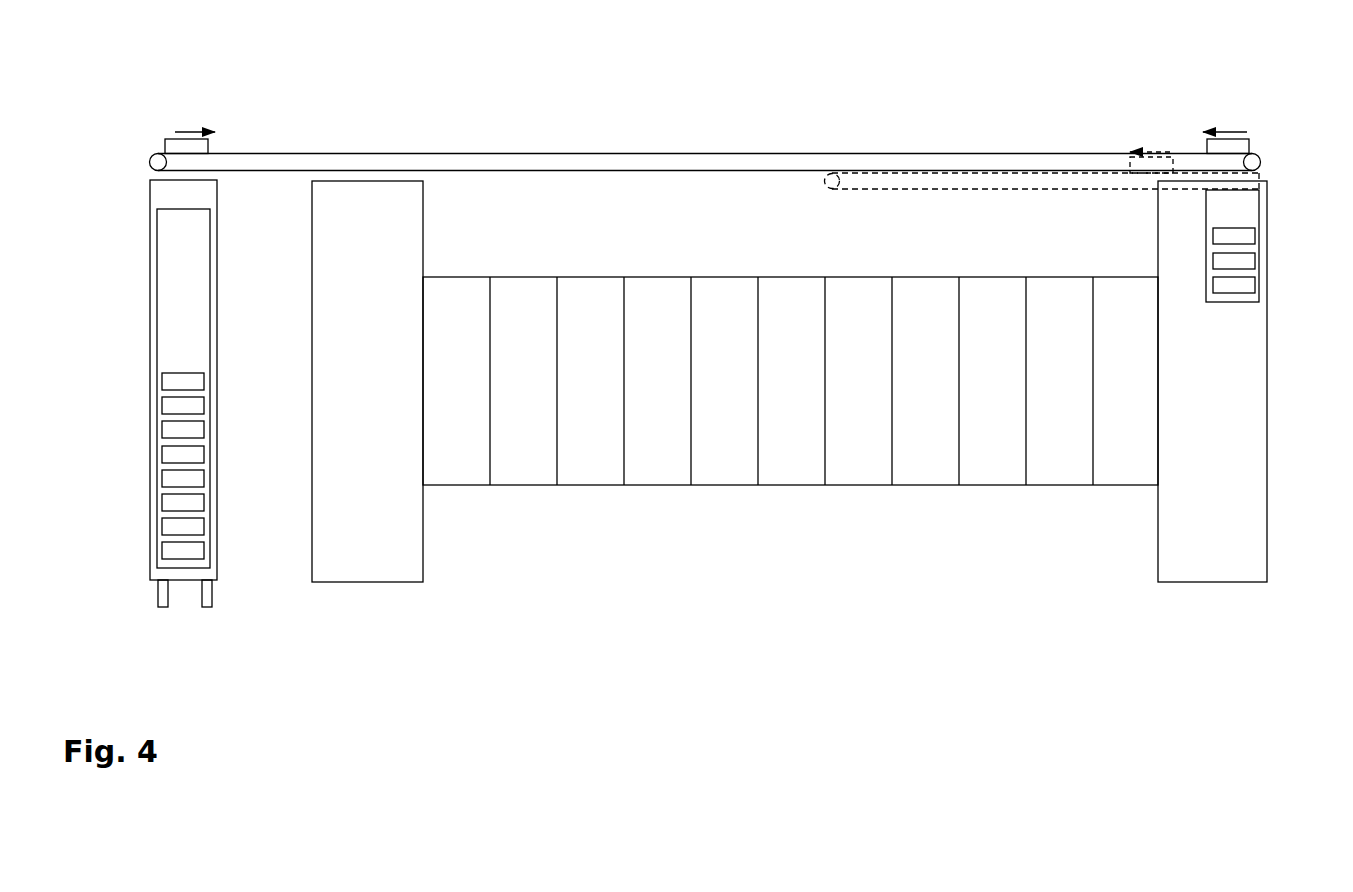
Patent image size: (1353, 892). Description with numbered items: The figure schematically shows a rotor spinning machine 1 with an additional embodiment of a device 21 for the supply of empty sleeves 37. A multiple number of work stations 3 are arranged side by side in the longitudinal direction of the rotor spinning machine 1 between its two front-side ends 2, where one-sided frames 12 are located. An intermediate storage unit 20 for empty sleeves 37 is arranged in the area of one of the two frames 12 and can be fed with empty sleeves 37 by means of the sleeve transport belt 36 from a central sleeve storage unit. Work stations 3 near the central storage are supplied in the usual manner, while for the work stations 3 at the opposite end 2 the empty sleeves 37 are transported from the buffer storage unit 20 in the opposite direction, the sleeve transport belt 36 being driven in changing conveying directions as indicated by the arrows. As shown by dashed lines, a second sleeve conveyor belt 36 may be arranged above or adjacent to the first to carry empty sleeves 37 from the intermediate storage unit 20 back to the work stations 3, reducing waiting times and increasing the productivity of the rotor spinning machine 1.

The rotor spinning machine 1 is at (705, 98).
The front-side ends 2 is at (204, 117).
The work stations 3 is at (523, 315).
The frames 12 is at (335, 330).
The intermediate storage unit 20 is at (712, 372).
The supply device 21 is at (175, 352).
The sleeve transport belt 36 is at (731, 152).
The empty sleeves 37 is at (168, 458).